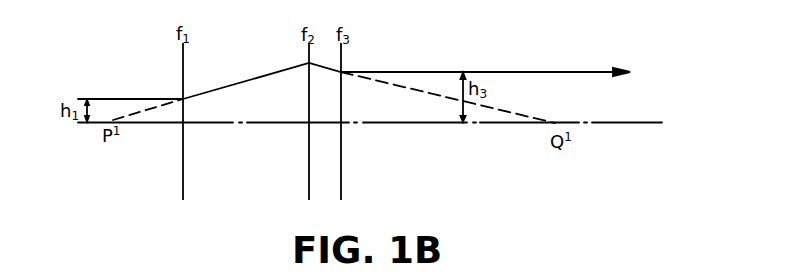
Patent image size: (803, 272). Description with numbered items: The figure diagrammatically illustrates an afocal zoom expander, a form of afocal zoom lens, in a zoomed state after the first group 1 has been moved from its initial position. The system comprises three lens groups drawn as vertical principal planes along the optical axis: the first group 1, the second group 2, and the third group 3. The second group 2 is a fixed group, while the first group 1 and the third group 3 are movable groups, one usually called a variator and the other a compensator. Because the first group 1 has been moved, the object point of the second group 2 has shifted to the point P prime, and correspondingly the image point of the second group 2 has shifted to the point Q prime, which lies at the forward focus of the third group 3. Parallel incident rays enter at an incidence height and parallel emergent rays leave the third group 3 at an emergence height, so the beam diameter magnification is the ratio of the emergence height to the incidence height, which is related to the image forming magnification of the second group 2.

The first group 1 is at (183, 180).
The second group 2 is at (309, 187).
The third group 3 is at (341, 187).